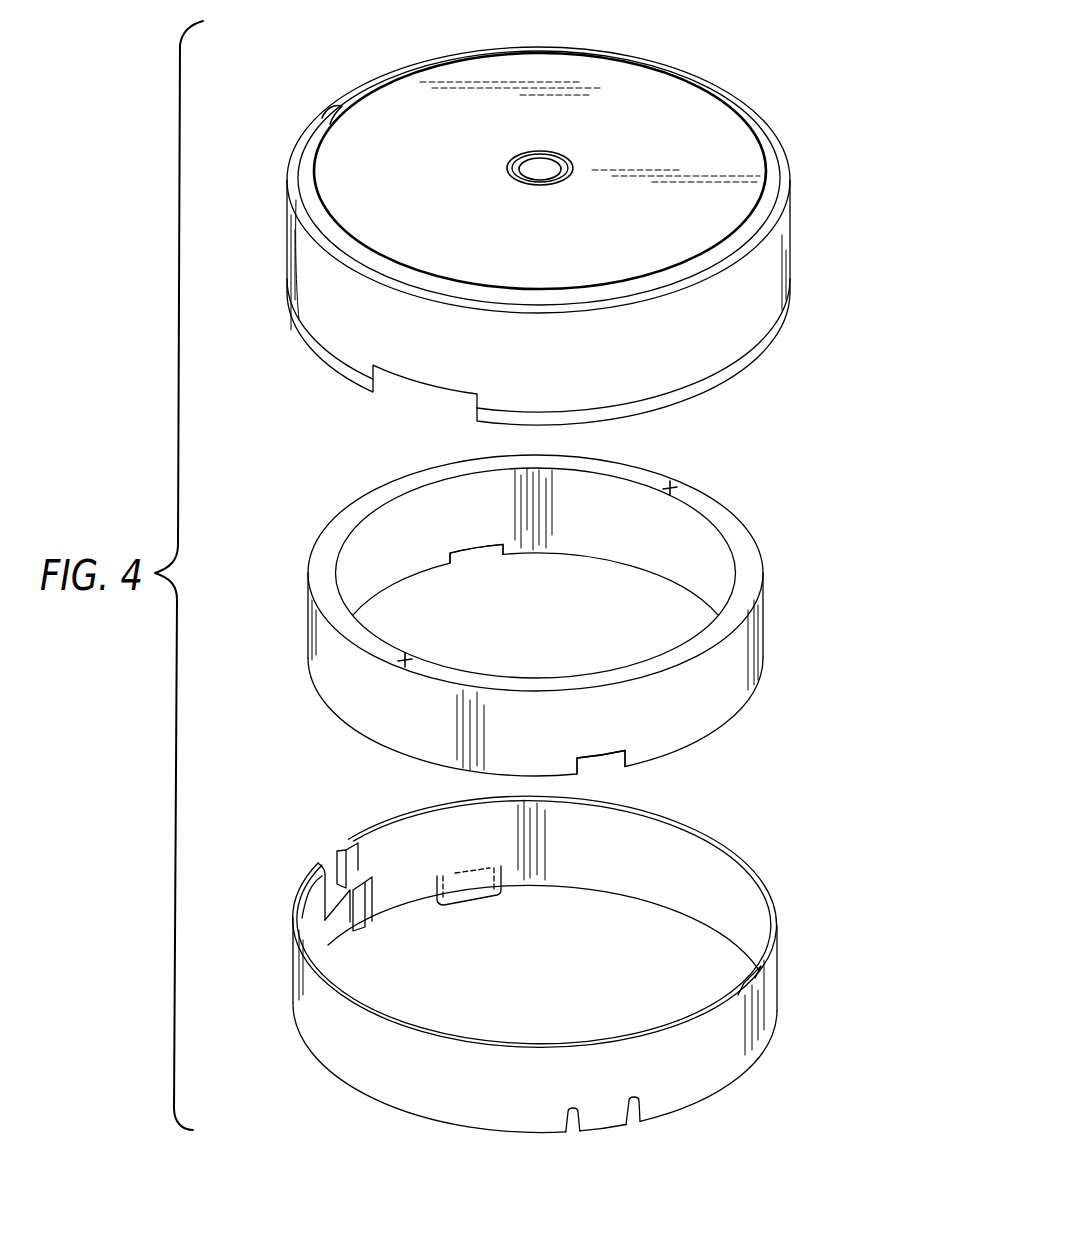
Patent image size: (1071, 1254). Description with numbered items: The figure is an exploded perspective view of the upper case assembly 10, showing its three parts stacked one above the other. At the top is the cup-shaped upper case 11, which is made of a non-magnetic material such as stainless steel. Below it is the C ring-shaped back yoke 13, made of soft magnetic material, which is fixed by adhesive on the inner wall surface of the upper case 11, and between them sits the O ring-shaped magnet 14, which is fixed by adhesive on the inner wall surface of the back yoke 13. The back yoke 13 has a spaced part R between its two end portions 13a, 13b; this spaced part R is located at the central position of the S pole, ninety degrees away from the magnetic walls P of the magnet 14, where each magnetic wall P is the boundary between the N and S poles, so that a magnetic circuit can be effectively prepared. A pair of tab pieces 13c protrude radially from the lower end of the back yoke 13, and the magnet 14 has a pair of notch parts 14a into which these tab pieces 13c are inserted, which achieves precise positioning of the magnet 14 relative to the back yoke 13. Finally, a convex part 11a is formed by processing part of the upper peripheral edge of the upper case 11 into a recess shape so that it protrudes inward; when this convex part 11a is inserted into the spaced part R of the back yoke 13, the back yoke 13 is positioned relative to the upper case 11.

The upper case assembly 10 is at (793, 97).
The upper case 11 is at (795, 258).
The convex part 11a is at (328, 110).
The magnet 14 is at (765, 648).
The notch part 14a is at (480, 553).
The back yoke 13 is at (776, 986).
The end portion 13a is at (298, 897).
The end portion 13b is at (350, 867).
The tab piece 13c is at (477, 890).
The magnetic wall P is at (672, 487).
The S pole S is at (372, 502).
The N pole N is at (714, 635).
The spaced part R is at (330, 872).